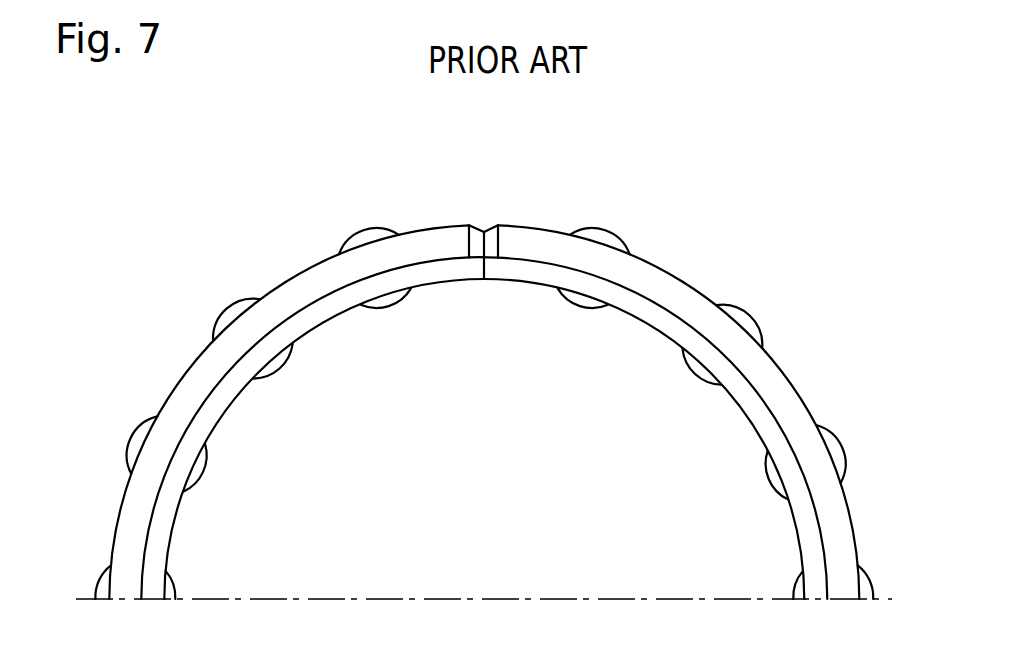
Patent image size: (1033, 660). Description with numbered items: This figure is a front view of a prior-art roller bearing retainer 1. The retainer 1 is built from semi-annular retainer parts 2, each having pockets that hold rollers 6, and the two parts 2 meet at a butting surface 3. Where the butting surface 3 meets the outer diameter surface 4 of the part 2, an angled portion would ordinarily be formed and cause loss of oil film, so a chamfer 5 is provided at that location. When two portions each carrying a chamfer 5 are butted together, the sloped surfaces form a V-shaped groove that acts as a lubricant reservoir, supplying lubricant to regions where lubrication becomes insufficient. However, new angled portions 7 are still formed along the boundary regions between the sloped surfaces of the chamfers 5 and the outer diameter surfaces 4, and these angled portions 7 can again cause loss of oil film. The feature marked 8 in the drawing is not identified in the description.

The roller bearing retainer 1 is at (705, 293).
The semi-annular retainer part 2 is at (200, 377).
The butting surface 3 is at (480, 266).
The outer diameter surface 4 is at (302, 270).
The chamfer 5 is at (490, 227).
The roller 6 is at (367, 237).
The angled portion 7 is at (469, 226).
The chamfer 8 is at (480, 224).